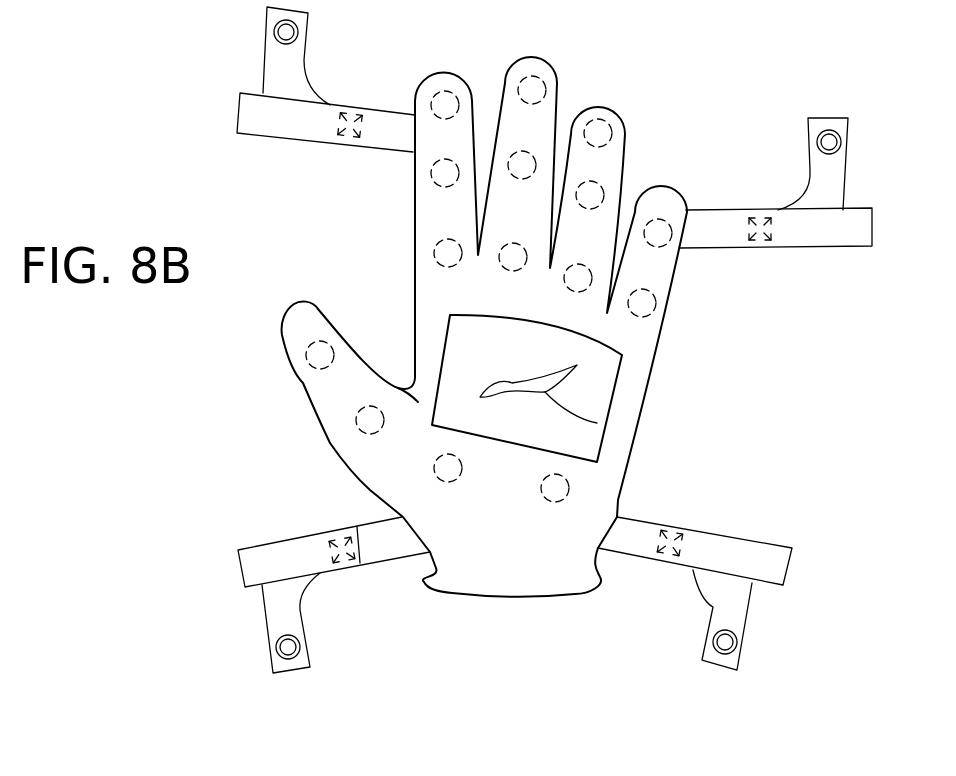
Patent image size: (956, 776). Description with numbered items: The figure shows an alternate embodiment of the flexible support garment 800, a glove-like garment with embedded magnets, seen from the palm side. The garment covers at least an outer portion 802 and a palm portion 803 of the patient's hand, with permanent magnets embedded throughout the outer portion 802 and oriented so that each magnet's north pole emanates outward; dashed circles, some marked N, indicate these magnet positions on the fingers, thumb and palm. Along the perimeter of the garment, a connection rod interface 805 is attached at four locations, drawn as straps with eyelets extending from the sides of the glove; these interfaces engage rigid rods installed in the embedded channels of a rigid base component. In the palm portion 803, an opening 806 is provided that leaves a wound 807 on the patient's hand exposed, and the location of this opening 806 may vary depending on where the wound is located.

The flexible support garment 800 is at (685, 135).
The outer portion 802 is at (643, 337).
The palm portion 803 is at (638, 382).
The connection rod interface 805 is at (272, 72).
The opening 806 is at (460, 340).
The wound 807 is at (597, 423).